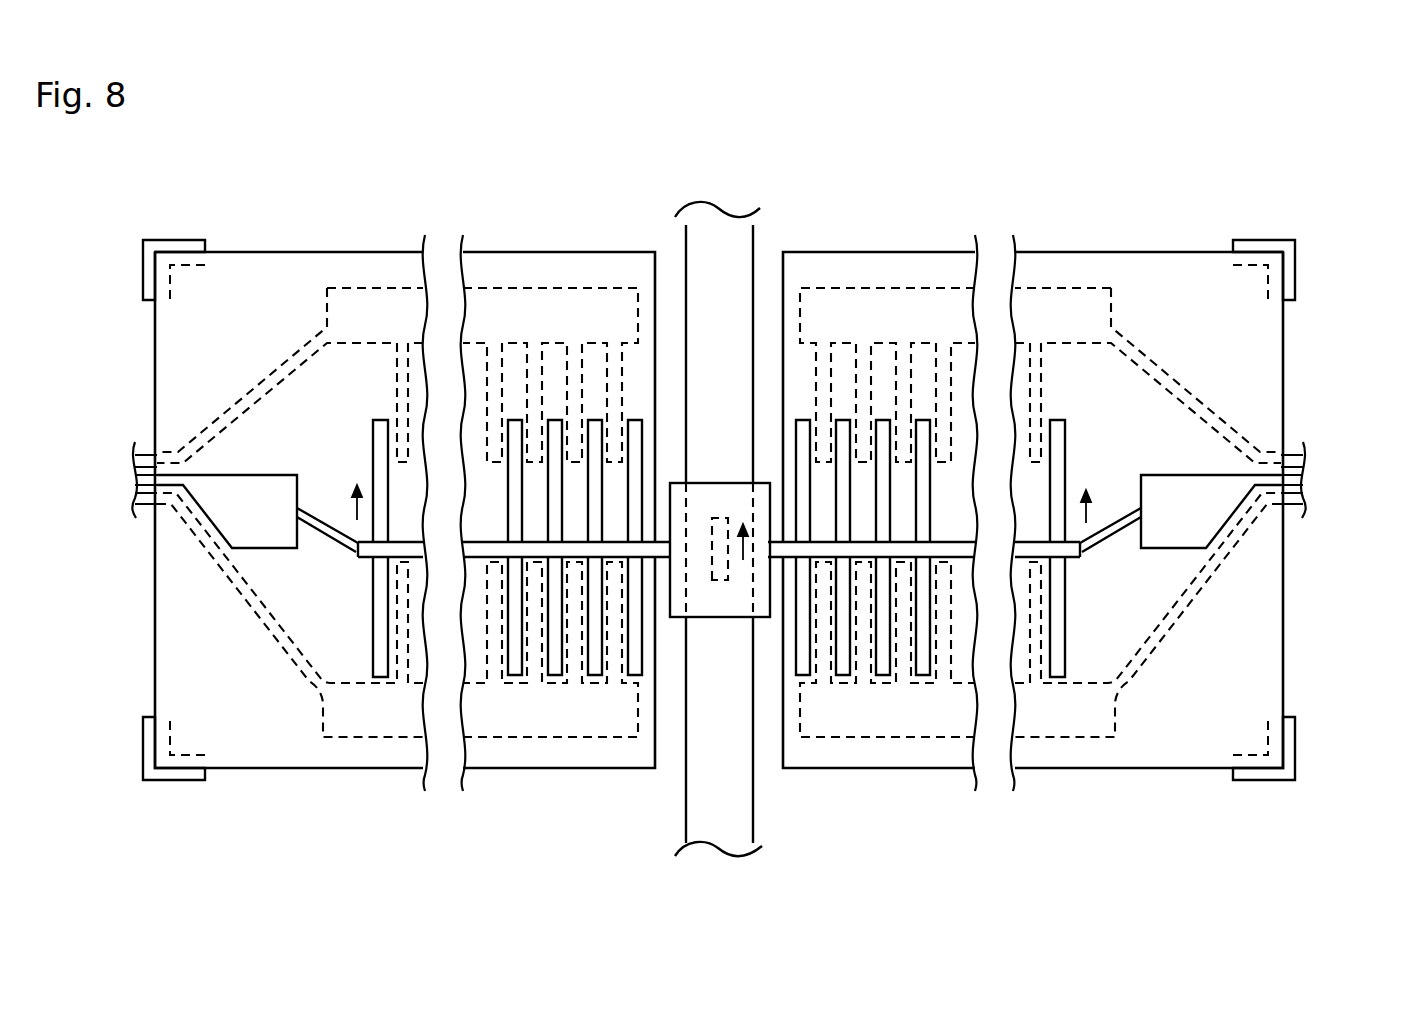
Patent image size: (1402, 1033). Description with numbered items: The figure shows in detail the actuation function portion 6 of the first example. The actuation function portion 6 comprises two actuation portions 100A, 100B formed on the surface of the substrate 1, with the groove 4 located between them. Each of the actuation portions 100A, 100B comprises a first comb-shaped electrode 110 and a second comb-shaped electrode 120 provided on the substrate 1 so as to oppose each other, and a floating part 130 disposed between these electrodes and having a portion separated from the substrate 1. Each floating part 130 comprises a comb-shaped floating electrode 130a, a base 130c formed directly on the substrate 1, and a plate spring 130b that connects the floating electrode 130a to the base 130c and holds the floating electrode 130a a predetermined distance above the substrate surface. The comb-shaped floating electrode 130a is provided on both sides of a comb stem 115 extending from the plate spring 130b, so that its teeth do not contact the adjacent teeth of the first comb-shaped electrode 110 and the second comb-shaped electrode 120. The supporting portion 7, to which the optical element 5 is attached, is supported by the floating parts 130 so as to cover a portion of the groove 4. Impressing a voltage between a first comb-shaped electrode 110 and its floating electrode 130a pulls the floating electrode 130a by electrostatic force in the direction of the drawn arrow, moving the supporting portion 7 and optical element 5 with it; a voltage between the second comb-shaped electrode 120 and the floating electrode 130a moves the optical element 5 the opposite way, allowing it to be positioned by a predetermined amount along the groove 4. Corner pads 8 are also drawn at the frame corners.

The substrate 1 is at (803, 213).
The groove 4 is at (741, 256).
The optical element 5 is at (714, 534).
The actuation function portion 6 is at (792, 128).
The supporting portion 7 is at (728, 620).
The corner pad 8 is at (153, 246).
The actuation portion 100A is at (378, 252).
The actuation portion 100B is at (878, 252).
The first comb-shaped electrode 110 is at (597, 317).
The comb stem 115 is at (961, 553).
The second comb-shaped electrode 120 is at (338, 720).
The floating part 130 is at (341, 497).
The comb-shaped floating electrode 130a is at (1057, 418).
The plate spring 130b is at (1118, 522).
The base 130c is at (1228, 490).